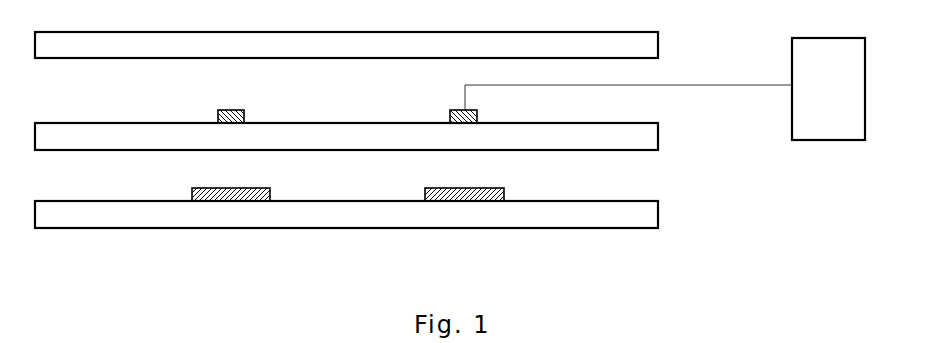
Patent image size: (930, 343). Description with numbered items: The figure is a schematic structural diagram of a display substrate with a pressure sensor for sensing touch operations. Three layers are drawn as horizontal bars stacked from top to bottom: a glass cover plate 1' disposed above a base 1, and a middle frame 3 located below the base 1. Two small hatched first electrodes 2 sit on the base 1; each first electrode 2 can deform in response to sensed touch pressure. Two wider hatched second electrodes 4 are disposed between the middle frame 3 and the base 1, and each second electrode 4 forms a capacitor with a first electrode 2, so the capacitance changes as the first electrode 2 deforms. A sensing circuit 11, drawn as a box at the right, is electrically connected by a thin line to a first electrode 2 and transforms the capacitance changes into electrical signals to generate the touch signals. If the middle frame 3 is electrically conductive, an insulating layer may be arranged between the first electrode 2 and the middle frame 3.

The glass cover plate 1' is at (386, 47).
The base 1 is at (389, 136).
The first electrode 2 is at (244, 122).
The middle frame 3 is at (658, 212).
The second electrode 4 is at (228, 202).
The sensing circuit 11 is at (665, 89).